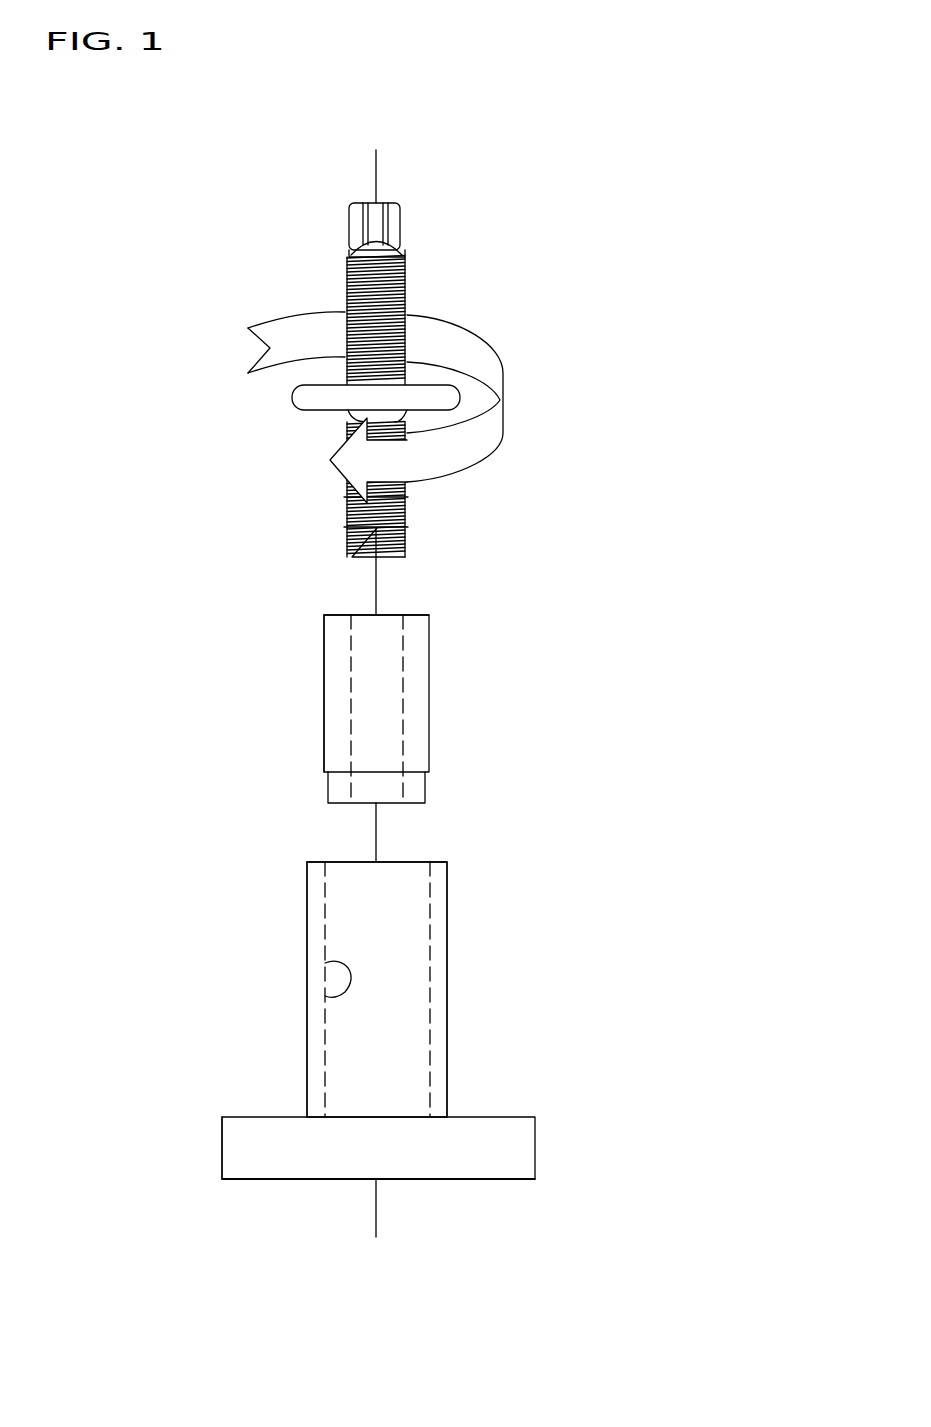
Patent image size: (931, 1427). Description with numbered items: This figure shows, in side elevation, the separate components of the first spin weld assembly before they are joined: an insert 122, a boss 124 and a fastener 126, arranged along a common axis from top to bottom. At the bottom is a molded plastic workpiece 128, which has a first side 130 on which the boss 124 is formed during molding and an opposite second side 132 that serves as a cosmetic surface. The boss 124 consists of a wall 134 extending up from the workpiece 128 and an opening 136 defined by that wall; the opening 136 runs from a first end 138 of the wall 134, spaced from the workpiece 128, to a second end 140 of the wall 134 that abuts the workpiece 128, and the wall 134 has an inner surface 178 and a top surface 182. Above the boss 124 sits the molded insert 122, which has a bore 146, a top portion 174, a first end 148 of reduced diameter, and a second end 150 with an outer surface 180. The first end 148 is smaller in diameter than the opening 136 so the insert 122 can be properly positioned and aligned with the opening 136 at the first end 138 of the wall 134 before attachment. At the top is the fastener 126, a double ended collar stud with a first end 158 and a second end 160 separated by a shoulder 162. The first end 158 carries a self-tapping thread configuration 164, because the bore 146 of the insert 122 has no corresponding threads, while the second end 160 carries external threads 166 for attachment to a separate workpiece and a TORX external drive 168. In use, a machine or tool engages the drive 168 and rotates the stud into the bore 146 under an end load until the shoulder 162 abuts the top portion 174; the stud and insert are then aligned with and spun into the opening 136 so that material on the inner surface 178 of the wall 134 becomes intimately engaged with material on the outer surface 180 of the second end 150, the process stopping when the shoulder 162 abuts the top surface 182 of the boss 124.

The insert 122 is at (354, 675).
The boss 124 is at (367, 942).
The fastener 126 is at (405, 255).
The workpiece 128 is at (252, 1157).
The first side 130 is at (396, 1153).
The second side 132 is at (455, 1180).
The wall 134 is at (440, 975).
The opening 136 is at (390, 880).
The first end 138 is at (310, 862).
The second end 140 is at (305, 1112).
The bore 146 is at (386, 632).
The first end 148 is at (427, 785).
The second end 150 is at (337, 678).
The first end 158 is at (404, 513).
The second end 160 is at (348, 272).
The shoulder 162 is at (303, 398).
The self-tapping threads 164 is at (348, 524).
The external threads 166 is at (411, 287).
The TORX external drive 168 is at (377, 176).
The top portion 174 is at (330, 614).
The inner surface 178 is at (320, 993).
The outer surface 180 is at (323, 714).
The top surface 182 is at (315, 862).